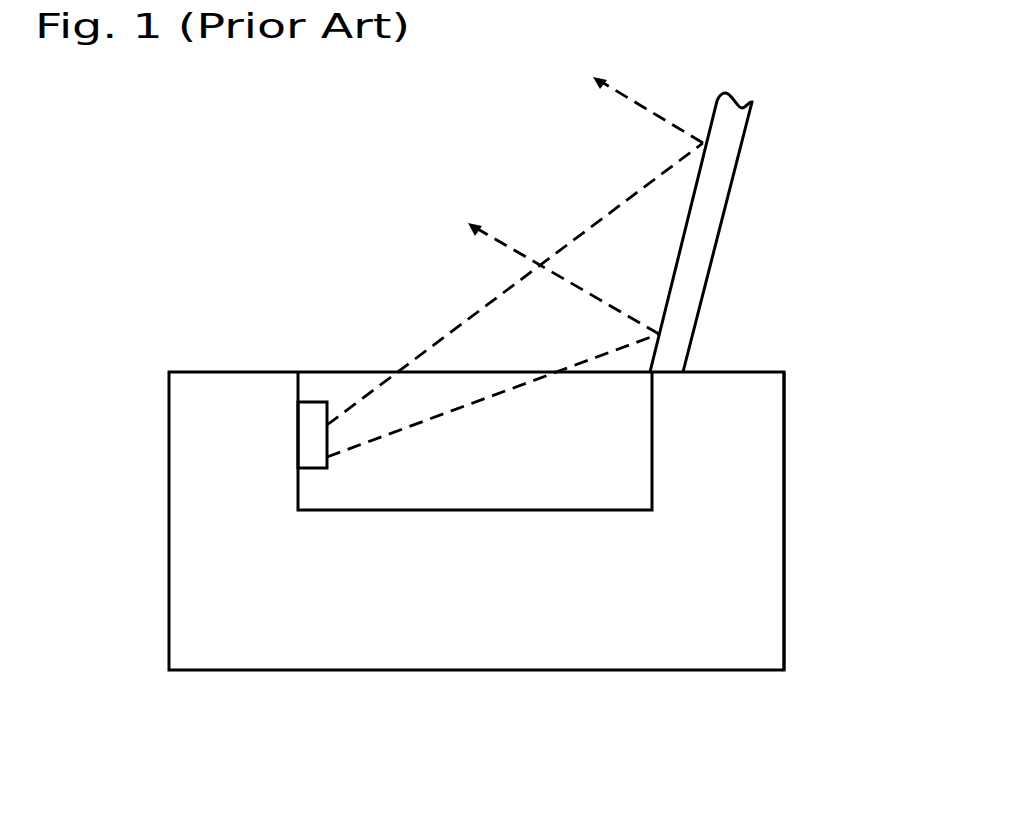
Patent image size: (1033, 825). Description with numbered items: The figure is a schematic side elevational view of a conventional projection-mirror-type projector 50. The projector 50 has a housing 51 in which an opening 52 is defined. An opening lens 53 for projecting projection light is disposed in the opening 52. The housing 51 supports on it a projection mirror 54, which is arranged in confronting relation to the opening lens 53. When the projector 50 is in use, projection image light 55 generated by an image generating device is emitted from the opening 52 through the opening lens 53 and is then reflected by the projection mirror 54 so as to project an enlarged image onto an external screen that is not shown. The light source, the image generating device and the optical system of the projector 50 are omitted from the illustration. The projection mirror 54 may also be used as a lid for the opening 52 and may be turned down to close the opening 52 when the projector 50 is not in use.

The projector 50 is at (278, 671).
The housing 51 is at (784, 553).
The opening 52 is at (468, 467).
The opening lens 53 is at (322, 413).
The projection mirror 54 is at (698, 250).
The projection image light 55 is at (602, 220).